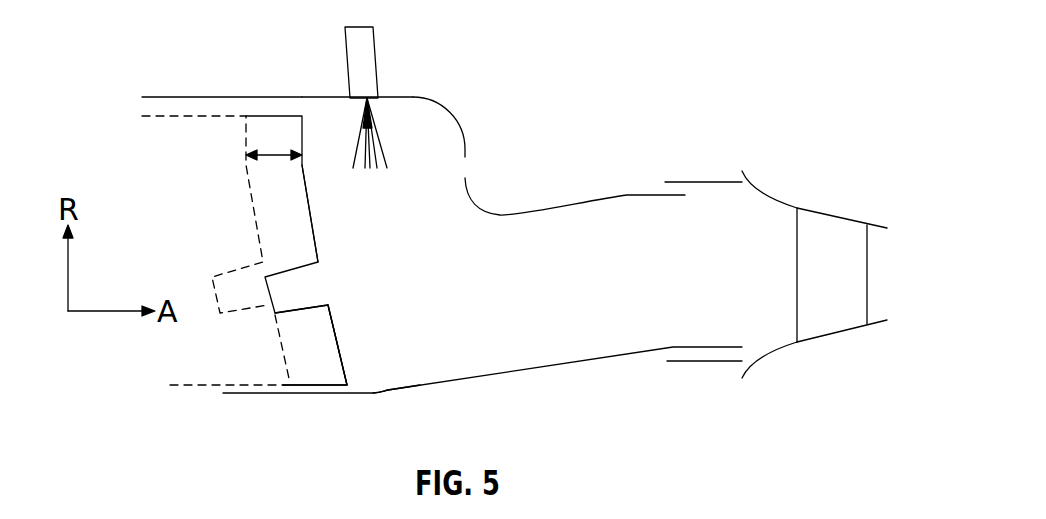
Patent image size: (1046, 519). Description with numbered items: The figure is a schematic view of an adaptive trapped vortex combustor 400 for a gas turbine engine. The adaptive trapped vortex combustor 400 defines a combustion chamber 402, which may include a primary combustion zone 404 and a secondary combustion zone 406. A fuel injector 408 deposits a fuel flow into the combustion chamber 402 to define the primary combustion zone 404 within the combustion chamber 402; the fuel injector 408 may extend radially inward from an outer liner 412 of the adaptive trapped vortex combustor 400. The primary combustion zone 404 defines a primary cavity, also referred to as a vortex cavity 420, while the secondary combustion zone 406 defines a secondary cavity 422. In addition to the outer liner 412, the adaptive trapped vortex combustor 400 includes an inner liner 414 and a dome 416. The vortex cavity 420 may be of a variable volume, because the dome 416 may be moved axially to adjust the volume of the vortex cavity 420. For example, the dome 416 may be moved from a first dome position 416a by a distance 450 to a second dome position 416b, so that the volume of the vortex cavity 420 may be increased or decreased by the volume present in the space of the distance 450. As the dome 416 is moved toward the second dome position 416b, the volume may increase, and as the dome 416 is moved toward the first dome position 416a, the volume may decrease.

The adaptive trapped vortex combustor 400 is at (106, 35).
The combustion chamber 402 is at (486, 196).
The primary combustion zone 404 is at (439, 142).
The secondary combustion zone 406 is at (397, 365).
The fuel injector 408 is at (375, 47).
The outer liner 412 is at (423, 97).
The inner liner 414 is at (540, 370).
The dome 416 is at (343, 368).
The first dome position 416a is at (327, 321).
The second dome position 416b is at (255, 213).
The vortex cavity 420 is at (365, 225).
The secondary cavity 422 is at (412, 317).
The distance 450 is at (273, 152).